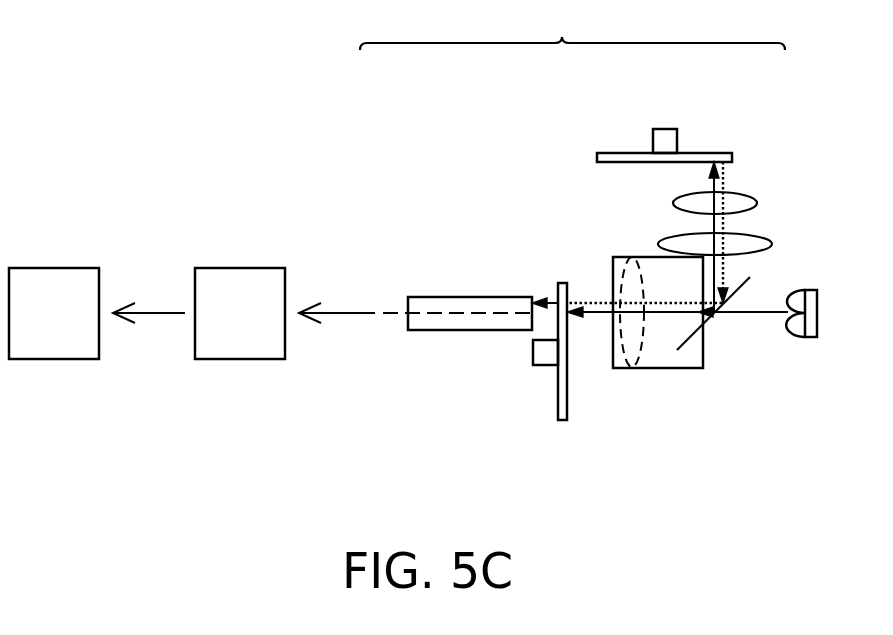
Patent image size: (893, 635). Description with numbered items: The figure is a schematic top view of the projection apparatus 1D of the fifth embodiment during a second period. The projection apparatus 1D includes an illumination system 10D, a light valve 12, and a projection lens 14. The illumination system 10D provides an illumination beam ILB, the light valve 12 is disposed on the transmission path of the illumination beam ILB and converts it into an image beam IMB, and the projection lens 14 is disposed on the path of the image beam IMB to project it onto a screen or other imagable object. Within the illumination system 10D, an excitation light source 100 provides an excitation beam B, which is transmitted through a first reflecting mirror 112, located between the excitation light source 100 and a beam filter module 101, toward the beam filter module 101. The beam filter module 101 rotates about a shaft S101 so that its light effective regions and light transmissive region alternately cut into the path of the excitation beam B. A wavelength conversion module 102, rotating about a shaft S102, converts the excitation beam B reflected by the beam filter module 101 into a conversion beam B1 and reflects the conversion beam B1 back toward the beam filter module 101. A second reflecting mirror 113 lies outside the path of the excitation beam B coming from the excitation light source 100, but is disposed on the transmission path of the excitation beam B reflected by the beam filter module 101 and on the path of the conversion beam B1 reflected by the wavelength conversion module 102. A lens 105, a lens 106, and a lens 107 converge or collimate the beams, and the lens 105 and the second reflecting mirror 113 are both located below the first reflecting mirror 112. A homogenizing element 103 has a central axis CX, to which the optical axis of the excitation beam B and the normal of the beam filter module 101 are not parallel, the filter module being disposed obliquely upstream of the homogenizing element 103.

The illumination system 10D is at (572, 25).
The projection apparatus 1D is at (868, 515).
The light valve 12 is at (254, 327).
The projection lens 14 is at (68, 327).
The image beam IMB is at (160, 313).
The illumination beam ILB is at (343, 313).
The central axis CX is at (393, 312).
The homogenizing element 103 is at (468, 297).
The beam filter module 101 is at (562, 421).
The shaft S101 is at (541, 358).
The excitation beam B is at (773, 313).
The conversion beam B1 is at (724, 180).
The second reflecting mirror 113 is at (711, 319).
The excitation light source 100 is at (808, 293).
The first reflecting mirror 112 is at (670, 369).
The lens 105 is at (625, 262).
The wavelength conversion module 102 is at (730, 158).
The shaft S102 is at (670, 139).
The lens 107 is at (748, 207).
The lens 106 is at (757, 245).